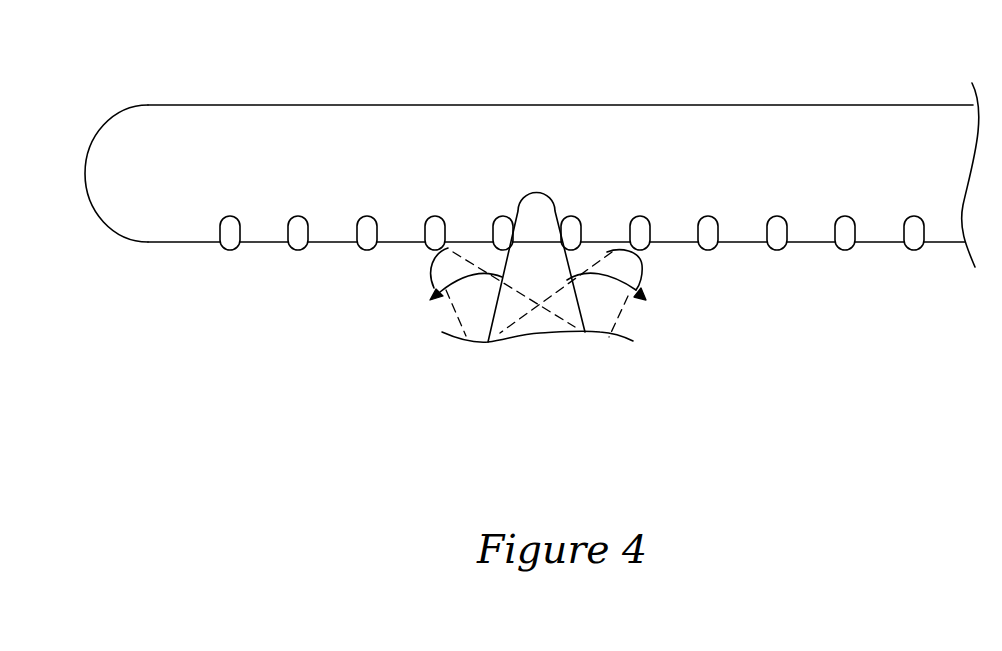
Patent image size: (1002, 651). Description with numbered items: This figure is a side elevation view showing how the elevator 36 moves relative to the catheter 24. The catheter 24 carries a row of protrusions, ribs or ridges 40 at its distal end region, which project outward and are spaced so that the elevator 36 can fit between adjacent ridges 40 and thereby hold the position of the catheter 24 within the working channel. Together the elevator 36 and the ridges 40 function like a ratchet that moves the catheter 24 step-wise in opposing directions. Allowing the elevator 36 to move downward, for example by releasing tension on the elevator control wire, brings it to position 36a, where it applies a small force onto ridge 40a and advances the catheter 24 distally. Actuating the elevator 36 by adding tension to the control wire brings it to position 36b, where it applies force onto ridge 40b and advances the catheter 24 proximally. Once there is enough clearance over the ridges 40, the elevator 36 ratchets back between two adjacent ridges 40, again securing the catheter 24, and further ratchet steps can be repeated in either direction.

The catheter 24 is at (403, 132).
The elevator 36 is at (535, 207).
The elevator position 36a is at (470, 310).
The elevator position 36b is at (603, 303).
The ridges 40 is at (229, 243).
The ridge 40a is at (503, 215).
The ridge 40b is at (571, 215).